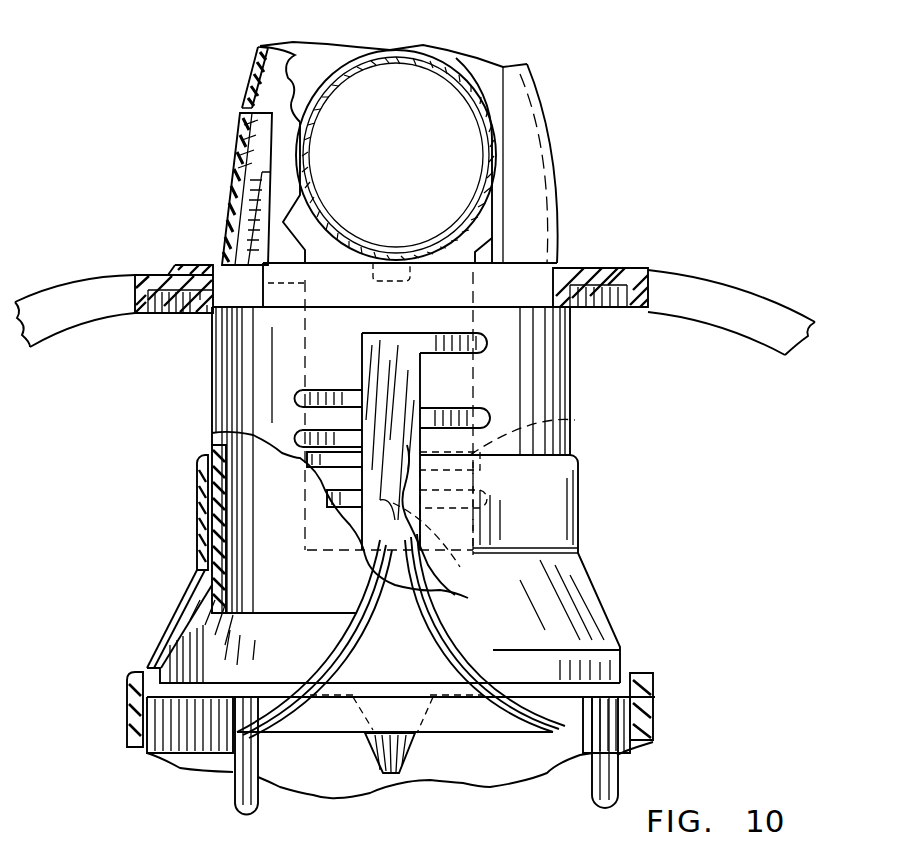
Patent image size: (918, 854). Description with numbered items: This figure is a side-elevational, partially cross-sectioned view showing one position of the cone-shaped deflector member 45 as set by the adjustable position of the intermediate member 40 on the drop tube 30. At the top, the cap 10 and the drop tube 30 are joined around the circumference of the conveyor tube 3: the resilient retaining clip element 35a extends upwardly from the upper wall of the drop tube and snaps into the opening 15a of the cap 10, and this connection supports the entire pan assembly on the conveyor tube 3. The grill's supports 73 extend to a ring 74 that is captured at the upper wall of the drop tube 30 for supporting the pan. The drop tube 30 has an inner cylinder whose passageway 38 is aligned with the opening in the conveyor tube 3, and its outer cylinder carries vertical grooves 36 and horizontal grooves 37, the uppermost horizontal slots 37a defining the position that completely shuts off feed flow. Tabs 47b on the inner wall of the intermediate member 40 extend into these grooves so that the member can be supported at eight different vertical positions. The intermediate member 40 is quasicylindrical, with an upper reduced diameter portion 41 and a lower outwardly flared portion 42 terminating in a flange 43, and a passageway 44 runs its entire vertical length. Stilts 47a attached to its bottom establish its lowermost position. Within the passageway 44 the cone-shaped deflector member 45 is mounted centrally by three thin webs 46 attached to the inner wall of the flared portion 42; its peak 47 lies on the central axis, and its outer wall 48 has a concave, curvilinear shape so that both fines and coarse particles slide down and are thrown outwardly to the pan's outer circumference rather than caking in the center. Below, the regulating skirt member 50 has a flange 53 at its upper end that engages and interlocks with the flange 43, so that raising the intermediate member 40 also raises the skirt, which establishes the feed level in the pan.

The cap 10 is at (540, 100).
The conveyor tube 3 is at (407, 70).
The opening of the cap 15a is at (248, 118).
The retaining clip element 35a is at (258, 143).
The ring 74 is at (620, 268).
The supports 73 is at (690, 285).
The drop tube 30 is at (570, 367).
The vertical grooves 36 is at (397, 426).
The horizontal grooves 37 is at (332, 398).
The horizontal slots 37a is at (450, 335).
The tabs 47b is at (578, 422).
The upper reduced diameter portion 41 is at (582, 488).
The intermediate member 40 is at (582, 508).
The passageway 38 is at (232, 572).
The peak 47 is at (440, 523).
The lower outwardly flared portion 42 is at (600, 590).
The passageway 44 is at (306, 659).
The flange 53 is at (140, 682).
The flange 43 is at (135, 720).
The regulating skirt member 50 is at (655, 707).
The stilts 47a is at (233, 780).
The outer wall 48 is at (350, 645).
The cone-shaped deflector member 45 is at (473, 735).
The thin webs 46 is at (378, 742).